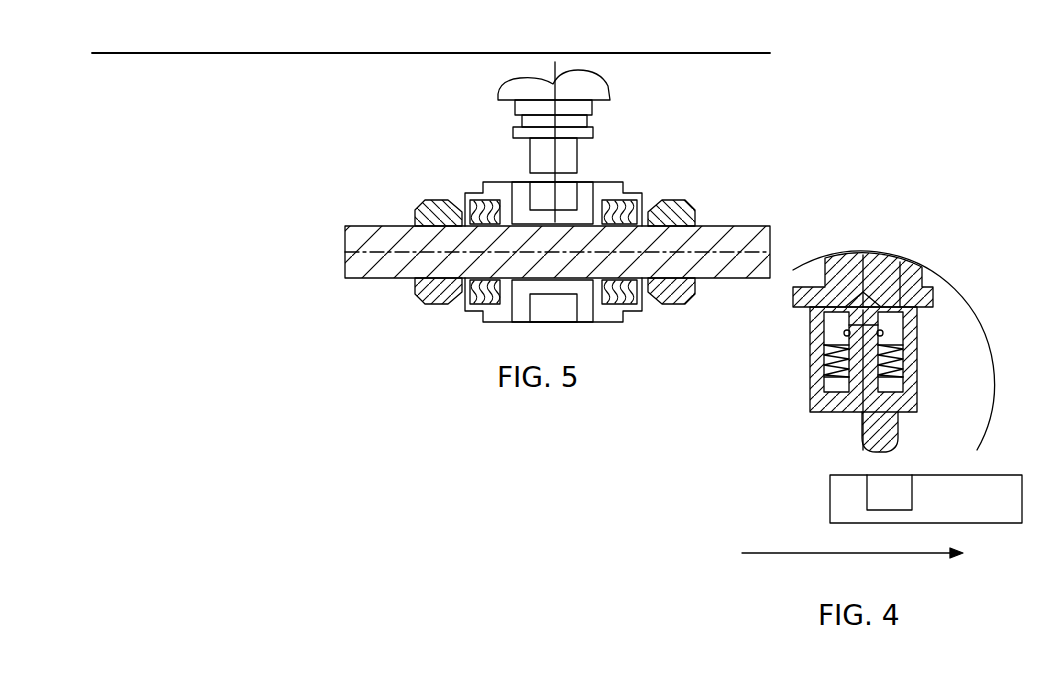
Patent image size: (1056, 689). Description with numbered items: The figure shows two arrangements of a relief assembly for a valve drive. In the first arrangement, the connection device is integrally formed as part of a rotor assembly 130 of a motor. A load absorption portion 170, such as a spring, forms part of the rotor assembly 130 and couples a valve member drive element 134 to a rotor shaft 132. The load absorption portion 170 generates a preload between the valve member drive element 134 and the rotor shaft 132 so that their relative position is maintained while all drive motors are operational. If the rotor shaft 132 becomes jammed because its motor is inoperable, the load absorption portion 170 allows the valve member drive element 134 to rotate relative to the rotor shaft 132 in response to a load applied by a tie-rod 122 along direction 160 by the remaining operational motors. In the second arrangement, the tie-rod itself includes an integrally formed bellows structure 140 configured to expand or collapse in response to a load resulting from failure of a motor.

In FIG. 5, the bellows structure 140 is at (462, 176).
In FIG. 4, the rotor shaft 132 is at (887, 270).
In FIG. 4, the rotor assembly 130 is at (800, 347).
In FIG. 4, the load absorption portion 170 is at (847, 362).
In FIG. 4, the valve member drive element 134 is at (868, 442).
In FIG. 4, the tie-rod 122 is at (830, 493).
In FIG. 4, the direction 160 is at (777, 552).